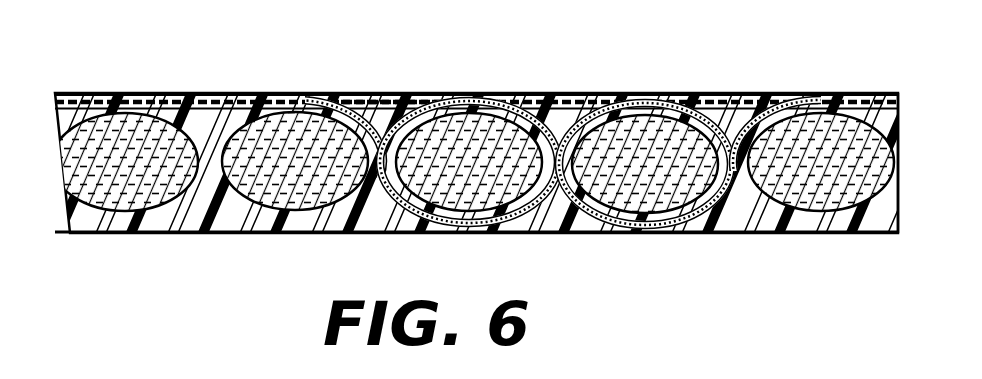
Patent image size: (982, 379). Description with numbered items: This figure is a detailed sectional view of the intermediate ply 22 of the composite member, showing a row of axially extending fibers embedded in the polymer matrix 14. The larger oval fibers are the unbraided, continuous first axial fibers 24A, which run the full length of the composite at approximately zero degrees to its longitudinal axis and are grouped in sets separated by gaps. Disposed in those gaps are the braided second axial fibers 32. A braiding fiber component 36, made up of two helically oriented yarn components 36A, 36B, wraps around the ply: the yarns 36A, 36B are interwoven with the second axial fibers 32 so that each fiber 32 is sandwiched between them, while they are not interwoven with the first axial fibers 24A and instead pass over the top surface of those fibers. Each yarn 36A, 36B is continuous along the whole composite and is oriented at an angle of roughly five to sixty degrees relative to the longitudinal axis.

The intermediate ply 22 is at (531, 66).
The polymer matrix 14 is at (361, 231).
The unbraided continuous fibers 24A is at (158, 180).
The braided axial fibers 32 is at (527, 229).
The braiding fiber component 36 is at (162, 93).
The helically oriented yarn component 36A is at (397, 93).
The helically oriented yarn component 36B is at (418, 93).